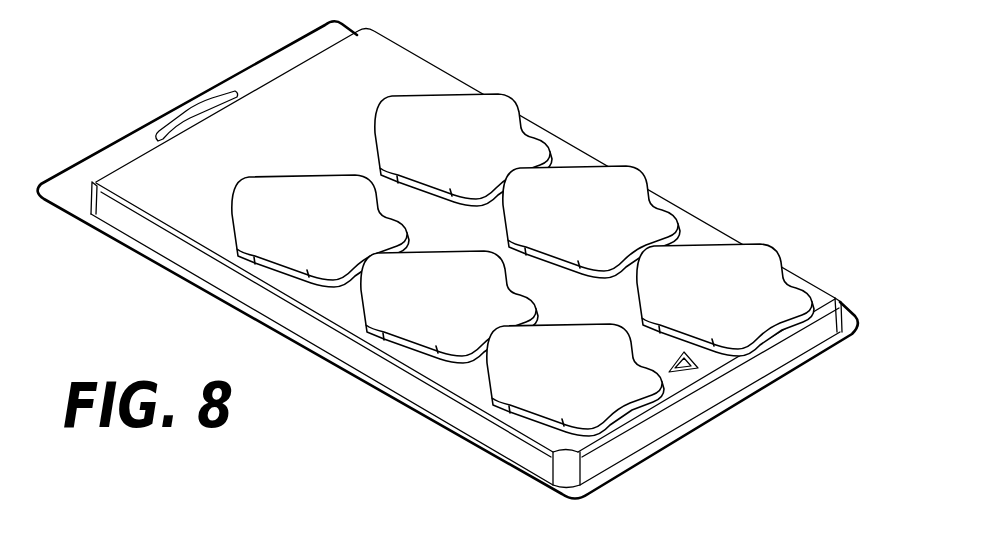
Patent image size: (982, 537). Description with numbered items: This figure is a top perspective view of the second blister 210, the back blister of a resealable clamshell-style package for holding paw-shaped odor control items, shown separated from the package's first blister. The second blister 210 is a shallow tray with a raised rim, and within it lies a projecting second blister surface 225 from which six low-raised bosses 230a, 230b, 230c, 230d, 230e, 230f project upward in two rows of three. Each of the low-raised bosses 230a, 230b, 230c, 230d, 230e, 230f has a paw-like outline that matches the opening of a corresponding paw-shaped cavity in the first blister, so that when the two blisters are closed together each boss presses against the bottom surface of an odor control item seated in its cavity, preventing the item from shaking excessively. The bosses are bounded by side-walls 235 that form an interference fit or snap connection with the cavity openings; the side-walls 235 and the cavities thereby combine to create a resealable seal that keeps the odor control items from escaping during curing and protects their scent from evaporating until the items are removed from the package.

The second blister 210 is at (761, 418).
The projecting second blister surface 225 is at (148, 164).
The low-raised boss 230a is at (510, 100).
The low-raised boss 230b is at (640, 177).
The low-raised boss 230c is at (781, 273).
The low-raised boss 230d is at (255, 272).
The low-raised boss 230e is at (400, 350).
The low-raised boss 230f is at (527, 423).
The side-walls 235 is at (779, 331).